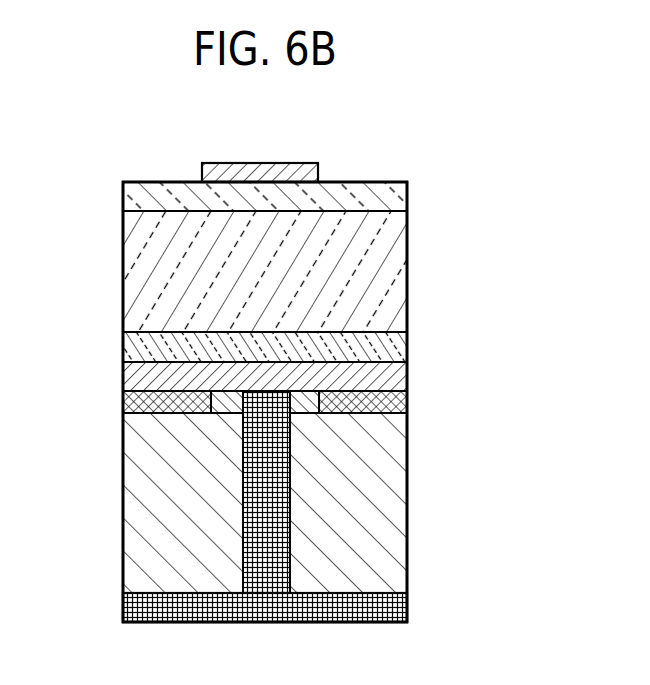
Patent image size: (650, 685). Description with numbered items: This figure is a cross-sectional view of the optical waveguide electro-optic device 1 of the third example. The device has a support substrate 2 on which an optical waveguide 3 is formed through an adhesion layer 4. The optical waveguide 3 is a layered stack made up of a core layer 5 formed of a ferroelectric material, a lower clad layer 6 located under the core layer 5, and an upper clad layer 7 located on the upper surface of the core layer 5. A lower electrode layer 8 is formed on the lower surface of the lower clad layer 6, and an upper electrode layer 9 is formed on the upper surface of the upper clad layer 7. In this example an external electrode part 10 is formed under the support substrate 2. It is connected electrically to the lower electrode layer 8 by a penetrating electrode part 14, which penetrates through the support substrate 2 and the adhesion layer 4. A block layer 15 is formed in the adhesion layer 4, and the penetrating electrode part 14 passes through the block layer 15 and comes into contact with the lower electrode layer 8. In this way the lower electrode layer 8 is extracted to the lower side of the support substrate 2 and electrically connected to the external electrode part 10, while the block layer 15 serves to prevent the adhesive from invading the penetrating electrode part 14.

The optical waveguide electro-optic device 1 is at (405, 135).
The support substrate 2 is at (128, 494).
The optical waveguide 3 is at (417, 182).
The adhesion layer 4 is at (130, 402).
The core layer 5 is at (130, 272).
The lower clad layer 6 is at (130, 346).
The upper clad layer 7 is at (128, 195).
The lower electrode layer 8 is at (130, 374).
The upper electrode layer 9 is at (220, 163).
The external electrode part 10 is at (264, 622).
The penetrating electrode part 14 is at (273, 498).
The block layer 15 is at (225, 412).